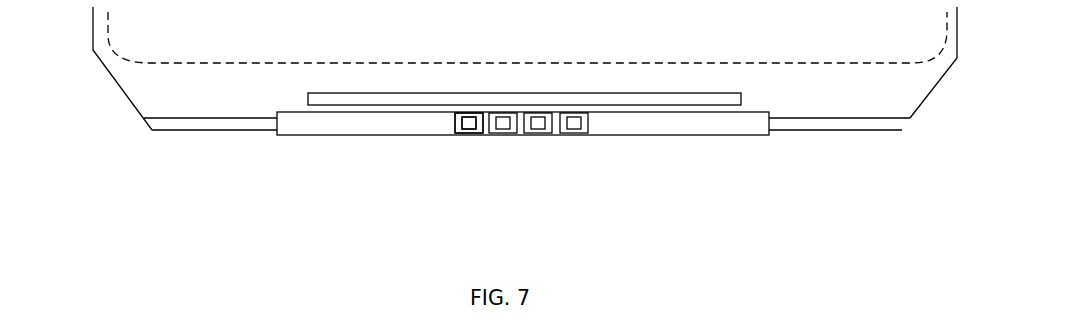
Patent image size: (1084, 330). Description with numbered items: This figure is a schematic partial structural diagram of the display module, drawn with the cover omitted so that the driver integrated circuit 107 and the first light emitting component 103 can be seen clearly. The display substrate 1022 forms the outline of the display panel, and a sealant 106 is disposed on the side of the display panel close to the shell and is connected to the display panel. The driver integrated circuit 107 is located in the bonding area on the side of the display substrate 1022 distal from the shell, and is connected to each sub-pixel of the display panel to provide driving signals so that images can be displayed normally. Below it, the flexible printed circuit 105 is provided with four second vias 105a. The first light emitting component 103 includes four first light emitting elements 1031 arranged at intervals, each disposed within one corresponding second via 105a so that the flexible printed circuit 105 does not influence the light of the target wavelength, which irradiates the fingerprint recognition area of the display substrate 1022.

The display substrate 1022 is at (143, 93).
The sealant 106 is at (180, 133).
The driver integrated circuit 107 is at (318, 117).
The flexible printed circuit 105 is at (635, 135).
The second via 105a is at (446, 129).
The first light emitting component 103 is at (468, 212).
The first light emitting element 1031 is at (466, 143).